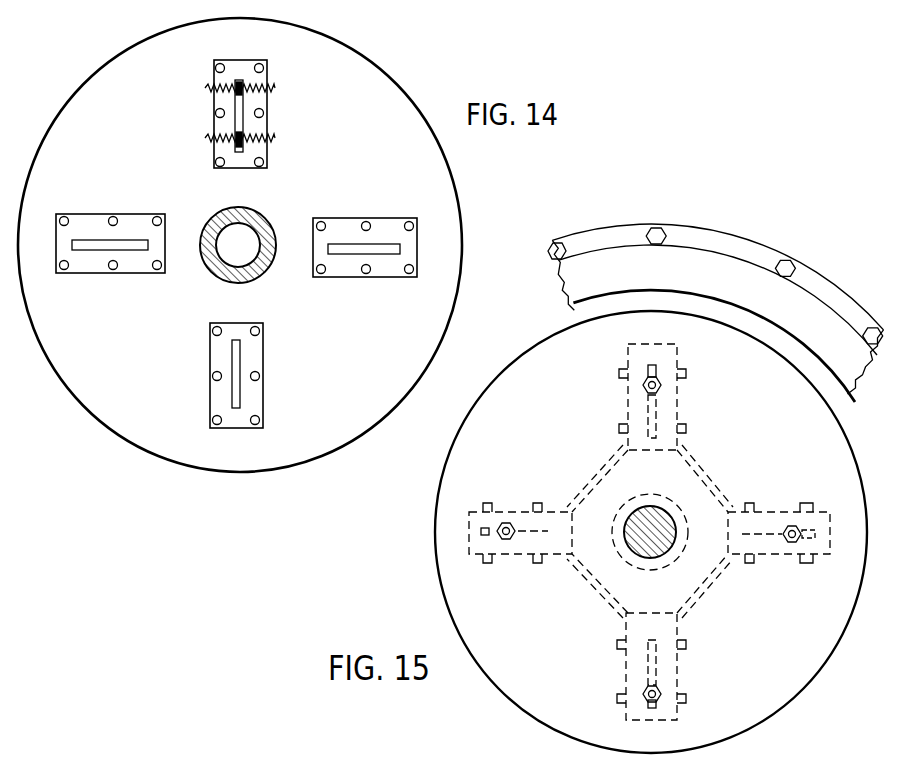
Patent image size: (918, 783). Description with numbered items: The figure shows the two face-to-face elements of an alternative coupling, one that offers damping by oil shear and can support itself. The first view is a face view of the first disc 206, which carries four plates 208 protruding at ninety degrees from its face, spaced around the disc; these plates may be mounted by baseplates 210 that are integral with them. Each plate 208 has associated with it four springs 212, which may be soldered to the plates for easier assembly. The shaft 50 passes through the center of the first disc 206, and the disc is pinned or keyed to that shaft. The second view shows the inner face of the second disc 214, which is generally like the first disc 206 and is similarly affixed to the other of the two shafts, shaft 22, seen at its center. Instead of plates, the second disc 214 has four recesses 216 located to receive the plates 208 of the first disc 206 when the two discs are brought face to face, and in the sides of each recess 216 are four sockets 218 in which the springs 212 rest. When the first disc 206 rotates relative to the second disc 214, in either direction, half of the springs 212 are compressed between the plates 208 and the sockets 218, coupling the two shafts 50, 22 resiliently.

In FIG. 14, the first disc 206 is at (358, 51).
In FIG. 14, the baseplate 210 is at (239, 61).
In FIG. 14, the plate 208 is at (247, 81).
In FIG. 14, the spring 212 is at (274, 90).
In FIG. 14, the shaft 50 is at (248, 236).
In FIG. 15, the second disc 214 is at (755, 236).
In FIG. 15, the socket 218 is at (688, 373).
In FIG. 15, the shaft 22 is at (656, 517).
In FIG. 15, the recess 216 is at (832, 487).